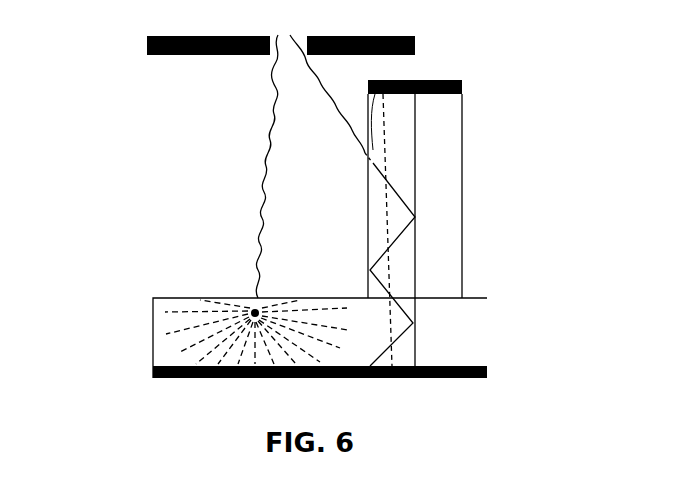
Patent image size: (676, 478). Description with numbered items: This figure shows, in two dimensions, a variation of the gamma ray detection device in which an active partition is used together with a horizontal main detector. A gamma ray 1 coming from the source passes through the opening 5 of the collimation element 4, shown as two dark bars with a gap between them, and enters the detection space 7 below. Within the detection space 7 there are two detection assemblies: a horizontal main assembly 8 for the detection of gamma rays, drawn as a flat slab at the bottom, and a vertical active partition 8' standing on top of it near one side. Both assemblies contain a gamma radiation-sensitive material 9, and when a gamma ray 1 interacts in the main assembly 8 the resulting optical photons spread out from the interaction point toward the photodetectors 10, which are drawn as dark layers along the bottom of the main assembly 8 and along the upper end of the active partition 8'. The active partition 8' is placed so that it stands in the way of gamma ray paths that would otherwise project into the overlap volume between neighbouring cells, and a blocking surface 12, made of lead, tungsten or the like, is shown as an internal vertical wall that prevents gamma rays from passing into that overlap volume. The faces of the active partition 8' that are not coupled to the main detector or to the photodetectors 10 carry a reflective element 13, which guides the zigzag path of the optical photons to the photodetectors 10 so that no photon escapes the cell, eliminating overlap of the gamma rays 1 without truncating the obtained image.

The gamma ray 1 is at (268, 145).
The collimation element 4 is at (147, 43).
The opening 5 is at (287, 36).
The detection space 7 is at (192, 232).
The assembly for the detection of gamma rays 8 is at (288, 338).
The assembly for the detection (active partition) of gamma rays 8' is at (442, 193).
The gamma radiation-sensitive material 9 is at (160, 327).
The photodetectors 10 is at (153, 373).
The blocking surface 12 is at (418, 174).
The reflective element 13 is at (413, 323).